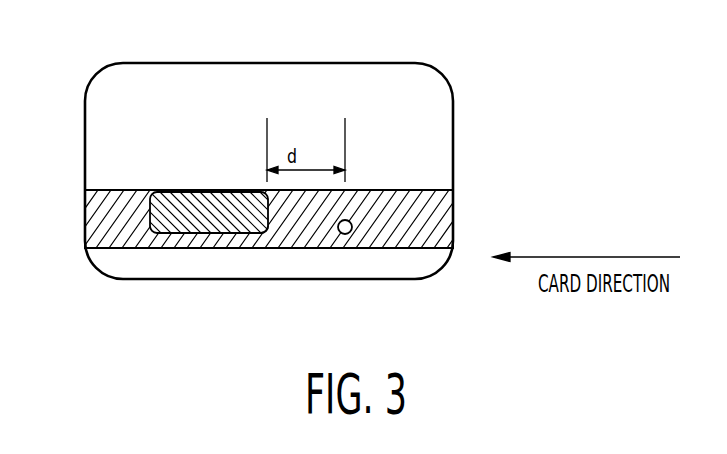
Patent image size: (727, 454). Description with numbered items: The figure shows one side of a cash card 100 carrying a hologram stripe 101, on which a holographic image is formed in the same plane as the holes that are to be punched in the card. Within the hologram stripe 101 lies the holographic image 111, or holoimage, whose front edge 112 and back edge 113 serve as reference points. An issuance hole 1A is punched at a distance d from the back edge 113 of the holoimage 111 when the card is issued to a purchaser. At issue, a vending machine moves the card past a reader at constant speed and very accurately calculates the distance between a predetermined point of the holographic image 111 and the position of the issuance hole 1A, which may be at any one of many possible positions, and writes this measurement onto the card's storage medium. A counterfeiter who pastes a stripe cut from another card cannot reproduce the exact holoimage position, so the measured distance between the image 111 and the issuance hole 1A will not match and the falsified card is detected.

The cash card 100 is at (98, 103).
The hologram stripe 101 is at (92, 214).
The holographic image 111 is at (182, 202).
The front edge of the holographic image 112 is at (150, 208).
The back edge of the holographic image 113 is at (268, 233).
The issuance hole 1A is at (352, 232).